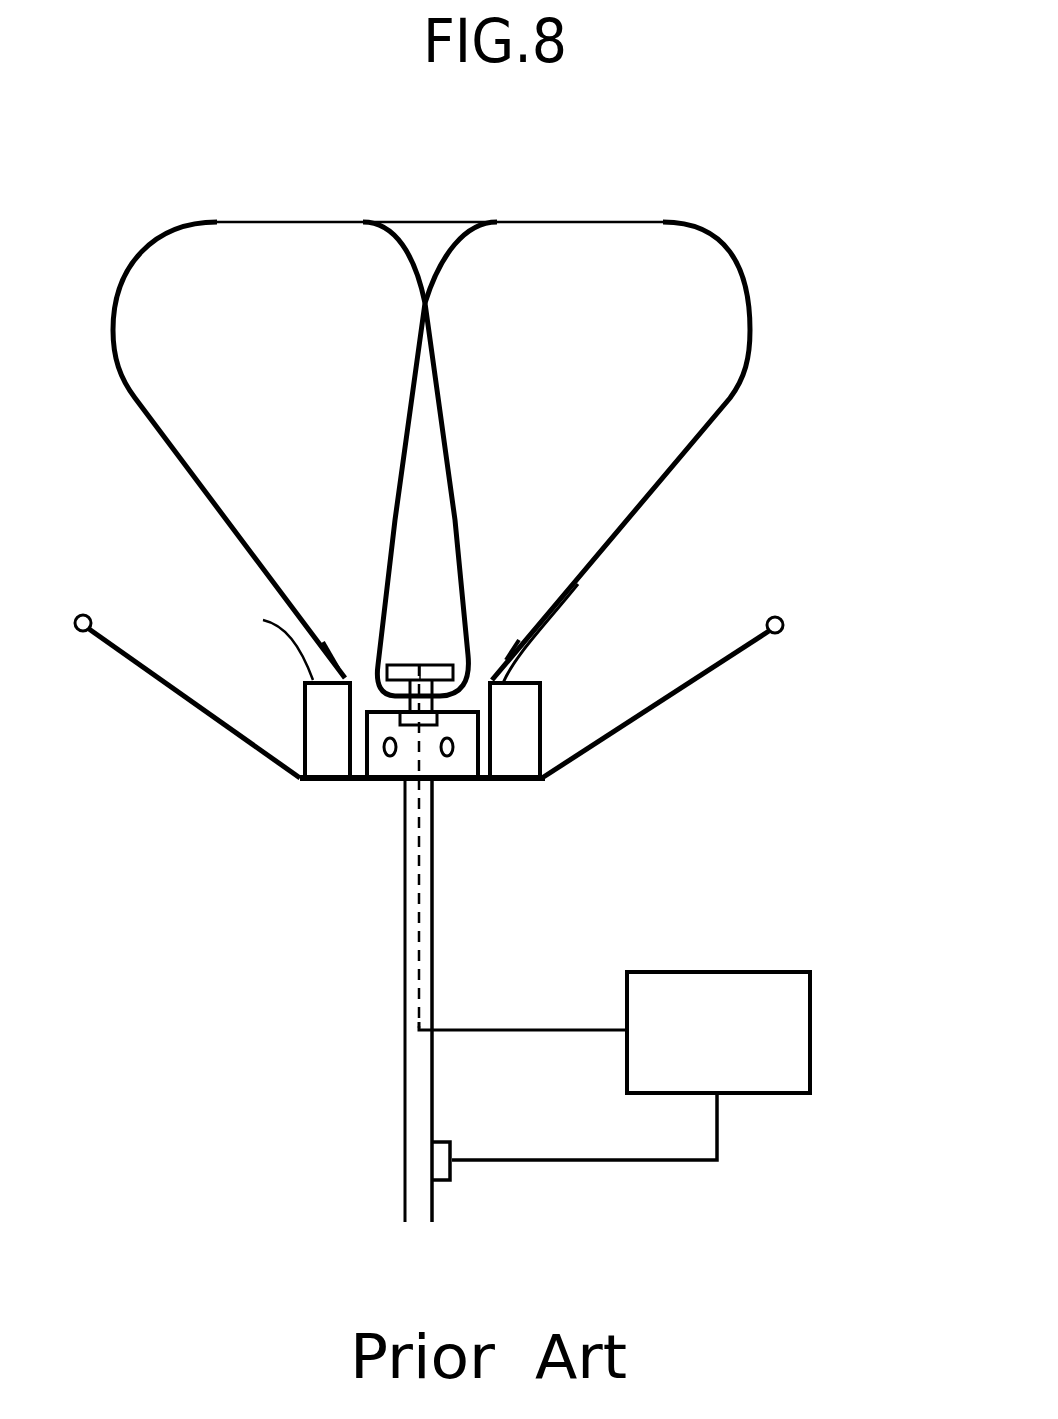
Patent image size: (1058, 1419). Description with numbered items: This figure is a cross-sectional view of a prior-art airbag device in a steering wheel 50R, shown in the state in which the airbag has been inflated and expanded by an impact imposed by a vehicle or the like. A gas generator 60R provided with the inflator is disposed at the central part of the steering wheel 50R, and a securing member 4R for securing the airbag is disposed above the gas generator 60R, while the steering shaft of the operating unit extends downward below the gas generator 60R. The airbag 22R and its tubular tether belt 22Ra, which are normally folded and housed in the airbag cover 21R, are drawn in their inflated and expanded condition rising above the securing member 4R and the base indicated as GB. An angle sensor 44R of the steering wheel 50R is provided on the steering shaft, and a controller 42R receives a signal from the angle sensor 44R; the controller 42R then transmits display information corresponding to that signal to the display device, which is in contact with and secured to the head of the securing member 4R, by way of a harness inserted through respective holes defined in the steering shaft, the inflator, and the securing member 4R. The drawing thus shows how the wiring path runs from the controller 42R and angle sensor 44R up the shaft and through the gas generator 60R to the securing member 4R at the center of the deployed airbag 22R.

The airbag 22R is at (713, 307).
The tubular tether belt 22Ra is at (437, 506).
The securing member 4R is at (452, 663).
The airbag cover 21R is at (255, 636).
The guide block GB is at (551, 720).
The gas generator 60R is at (452, 765).
The steering wheel 50R is at (797, 636).
The controller 42R is at (782, 1023).
The angle sensor 44R is at (455, 1178).